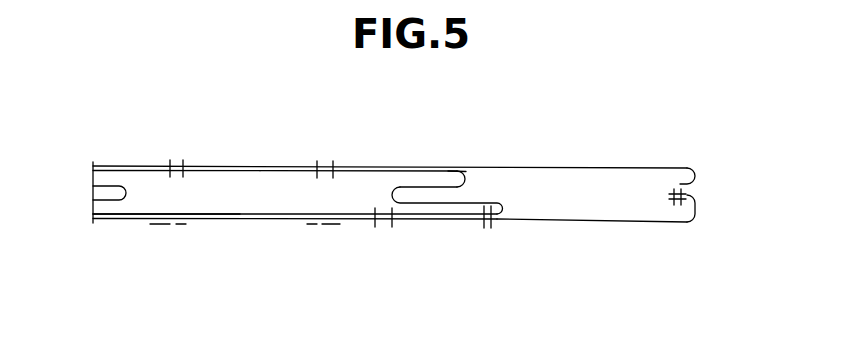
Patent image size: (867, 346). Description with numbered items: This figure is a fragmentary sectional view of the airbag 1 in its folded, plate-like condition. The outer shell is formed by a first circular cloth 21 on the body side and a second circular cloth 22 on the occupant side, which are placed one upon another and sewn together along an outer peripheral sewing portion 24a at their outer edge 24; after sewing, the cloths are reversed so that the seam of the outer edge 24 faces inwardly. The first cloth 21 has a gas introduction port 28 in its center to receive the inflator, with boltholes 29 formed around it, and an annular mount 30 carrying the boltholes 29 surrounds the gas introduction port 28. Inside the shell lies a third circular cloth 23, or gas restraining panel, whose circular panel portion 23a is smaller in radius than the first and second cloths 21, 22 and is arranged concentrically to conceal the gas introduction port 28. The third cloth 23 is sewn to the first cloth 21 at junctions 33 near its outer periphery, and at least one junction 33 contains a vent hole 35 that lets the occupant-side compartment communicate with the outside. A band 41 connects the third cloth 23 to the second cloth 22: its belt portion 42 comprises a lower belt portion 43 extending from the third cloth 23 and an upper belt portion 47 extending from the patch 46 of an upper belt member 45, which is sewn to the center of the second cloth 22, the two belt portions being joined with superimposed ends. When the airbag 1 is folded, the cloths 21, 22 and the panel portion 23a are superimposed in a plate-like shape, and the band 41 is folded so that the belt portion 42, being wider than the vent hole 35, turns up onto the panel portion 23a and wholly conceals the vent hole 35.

The airbag 1 is at (620, 130).
The first circular cloth 21 is at (615, 222).
The second circular cloth 22 is at (542, 168).
The third circular cloth 23 is at (288, 220).
The panel portion 23a is at (260, 220).
The outer edge 24 is at (698, 204).
The outer peripheral sewing portion 24a is at (697, 174).
The gas introduction port 28 is at (212, 223).
The boltholes 29 is at (175, 228).
The annular mount 30 is at (160, 224).
The junctions 33 is at (501, 222).
The vent hole 35 is at (428, 222).
The band 41 is at (403, 187).
The belt portion 42 is at (442, 187).
The lower belt portions 43 is at (500, 203).
The upper belt member 45 is at (288, 166).
The patch 46 is at (240, 166).
The upper belt portions 47 is at (457, 171).